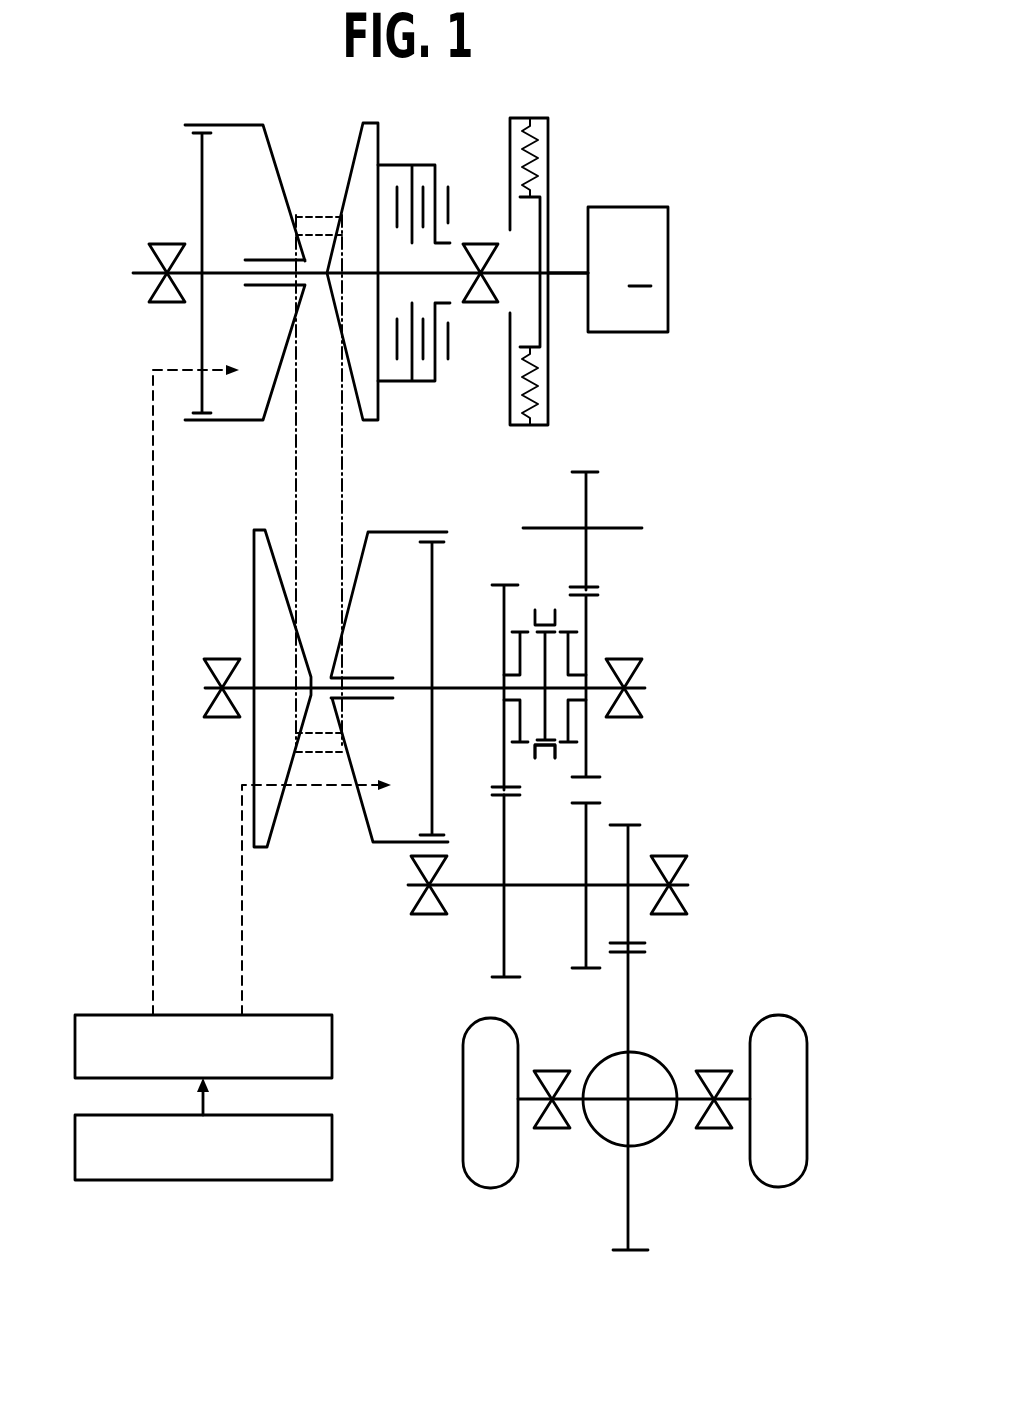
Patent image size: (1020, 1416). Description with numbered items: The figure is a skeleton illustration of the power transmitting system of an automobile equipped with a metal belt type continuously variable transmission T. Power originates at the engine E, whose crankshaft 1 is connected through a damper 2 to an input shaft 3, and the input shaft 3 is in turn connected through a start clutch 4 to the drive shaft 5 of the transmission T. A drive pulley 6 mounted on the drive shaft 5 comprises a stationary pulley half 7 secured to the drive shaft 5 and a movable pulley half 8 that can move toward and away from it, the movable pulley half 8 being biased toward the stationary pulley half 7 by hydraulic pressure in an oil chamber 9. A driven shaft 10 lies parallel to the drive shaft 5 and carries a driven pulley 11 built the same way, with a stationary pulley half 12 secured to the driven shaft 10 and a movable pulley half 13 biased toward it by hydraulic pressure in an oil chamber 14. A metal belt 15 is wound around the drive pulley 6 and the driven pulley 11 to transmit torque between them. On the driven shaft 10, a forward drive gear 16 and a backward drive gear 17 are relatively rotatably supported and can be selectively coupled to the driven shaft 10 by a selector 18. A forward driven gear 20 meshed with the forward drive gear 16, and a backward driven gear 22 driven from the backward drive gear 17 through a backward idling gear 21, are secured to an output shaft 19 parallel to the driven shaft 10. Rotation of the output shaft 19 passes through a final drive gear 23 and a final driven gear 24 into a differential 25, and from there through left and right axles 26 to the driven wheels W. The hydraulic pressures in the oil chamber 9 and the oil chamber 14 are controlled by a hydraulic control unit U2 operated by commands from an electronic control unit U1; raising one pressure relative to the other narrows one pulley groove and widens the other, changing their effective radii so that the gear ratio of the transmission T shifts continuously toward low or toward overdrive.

The crankshaft 1 is at (566, 277).
The damper 2 is at (557, 154).
The input shaft 3 is at (505, 269).
The start clutch 4 is at (420, 164).
The drive shaft 5 is at (220, 270).
The drive pulley 6 is at (281, 249).
The stationary pulley half 7 is at (307, 175).
The movable pulley half 8 is at (268, 158).
The oil chamber 9 is at (240, 340).
The driven shaft 10 is at (480, 687).
The driven pulley 11 is at (321, 721).
The stationary pulley half 12 is at (254, 568).
The movable pulley half 13 is at (363, 565).
The oil chamber 14 is at (398, 768).
The metal belt 15 is at (342, 490).
The forward drive gear 16 is at (497, 585).
The backward drive gear 17 is at (598, 596).
The selector 18 is at (548, 762).
The output shaft 19 is at (530, 883).
The forward driven gear 20 is at (512, 978).
The backward idling gear 21 is at (593, 471).
The backward driven gear 22 is at (586, 971).
The final drive gear 23 is at (636, 822).
The final driven gear 24 is at (641, 951).
The differential 25 is at (660, 1060).
The axle 26 is at (563, 1106).
The engine E is at (628, 269).
The metal belt type continuously variable transmission T is at (244, 469).
The driven wheel W is at (463, 1152).
The electronic control unit U1 is at (332, 1138).
The hydraulic control unit U2 is at (332, 1038).